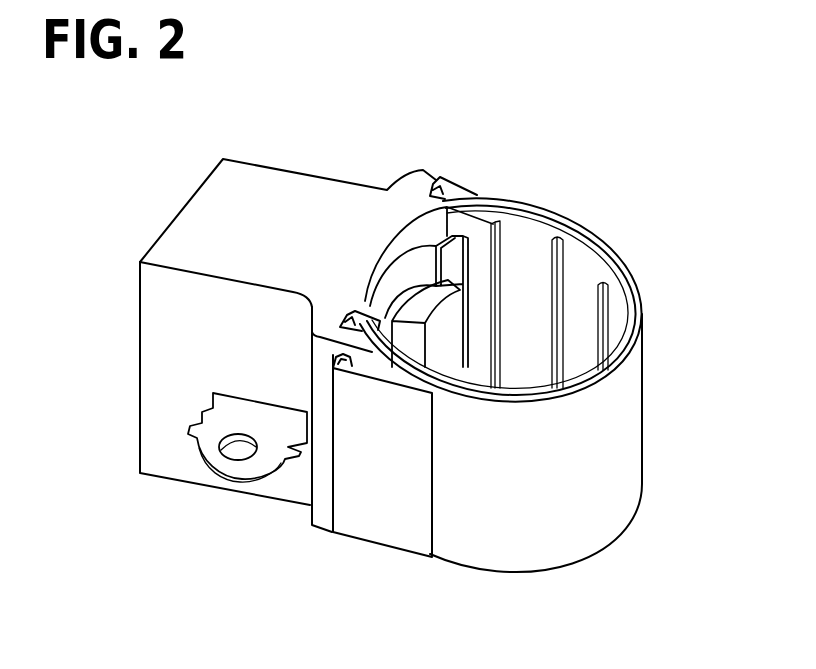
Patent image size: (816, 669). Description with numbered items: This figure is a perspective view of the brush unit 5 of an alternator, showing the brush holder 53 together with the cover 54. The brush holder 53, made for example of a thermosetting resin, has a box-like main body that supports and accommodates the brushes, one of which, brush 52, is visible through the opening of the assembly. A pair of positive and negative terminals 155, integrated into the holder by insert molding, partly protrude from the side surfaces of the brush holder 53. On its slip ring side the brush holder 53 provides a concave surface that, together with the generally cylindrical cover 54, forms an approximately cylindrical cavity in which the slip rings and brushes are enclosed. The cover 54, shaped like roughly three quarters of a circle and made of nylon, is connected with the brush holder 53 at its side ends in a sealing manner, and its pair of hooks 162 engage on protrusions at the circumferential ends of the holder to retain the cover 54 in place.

The brush unit 5 is at (570, 184).
The brush 52 is at (452, 325).
The brush holder 53 is at (222, 192).
The cover 54 is at (632, 415).
The terminal 155 is at (242, 467).
The hook 162 is at (387, 518).